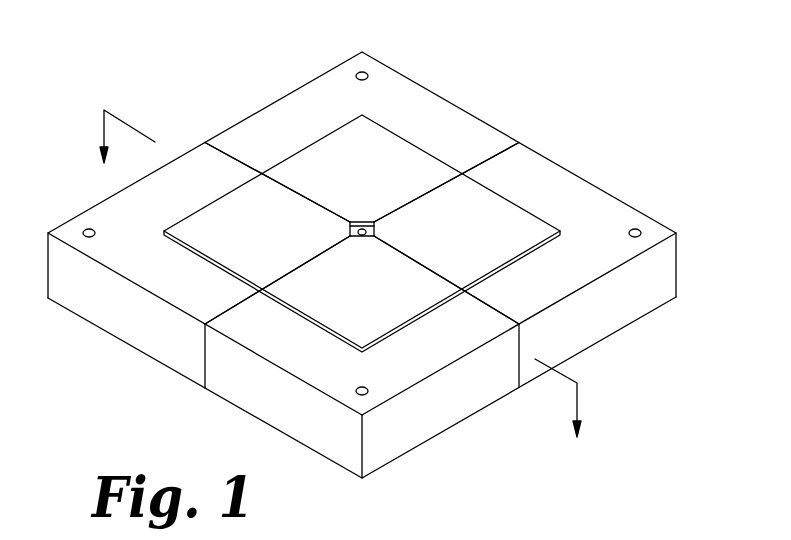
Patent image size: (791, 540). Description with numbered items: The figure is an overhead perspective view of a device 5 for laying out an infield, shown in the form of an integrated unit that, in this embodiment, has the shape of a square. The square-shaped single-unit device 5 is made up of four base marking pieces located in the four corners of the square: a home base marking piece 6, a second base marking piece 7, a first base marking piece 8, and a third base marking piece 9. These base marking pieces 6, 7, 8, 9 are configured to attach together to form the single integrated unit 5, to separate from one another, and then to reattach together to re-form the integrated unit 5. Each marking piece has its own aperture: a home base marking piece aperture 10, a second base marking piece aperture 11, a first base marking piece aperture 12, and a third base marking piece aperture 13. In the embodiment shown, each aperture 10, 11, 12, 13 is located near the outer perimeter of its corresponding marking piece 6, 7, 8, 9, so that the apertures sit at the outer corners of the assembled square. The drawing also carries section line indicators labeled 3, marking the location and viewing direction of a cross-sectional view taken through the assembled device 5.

The section line 3- 3 is at (338, 273).
The device 5 is at (508, 79).
The home base marking piece 6 is at (419, 362).
The second base marking piece 7 is at (410, 117).
The first base marking piece 8 is at (595, 244).
The third base marking piece 9 is at (134, 244).
The home base marking piece aperture 10 is at (367, 389).
The second base marking piece aperture 11 is at (358, 72).
The first base marking piece aperture 12 is at (638, 229).
The third base marking piece aperture 13 is at (87, 229).